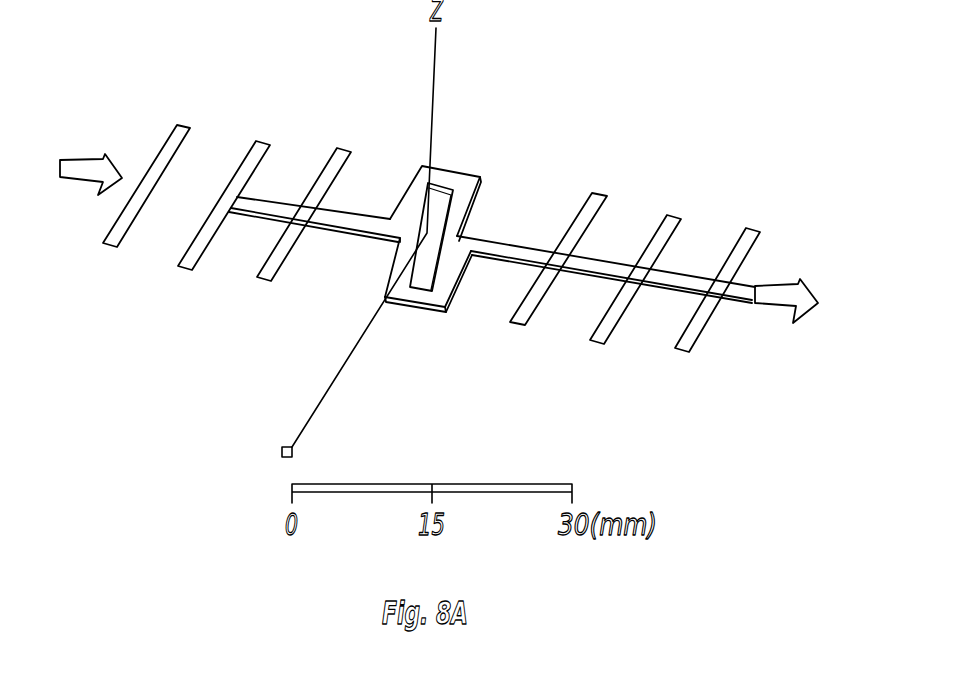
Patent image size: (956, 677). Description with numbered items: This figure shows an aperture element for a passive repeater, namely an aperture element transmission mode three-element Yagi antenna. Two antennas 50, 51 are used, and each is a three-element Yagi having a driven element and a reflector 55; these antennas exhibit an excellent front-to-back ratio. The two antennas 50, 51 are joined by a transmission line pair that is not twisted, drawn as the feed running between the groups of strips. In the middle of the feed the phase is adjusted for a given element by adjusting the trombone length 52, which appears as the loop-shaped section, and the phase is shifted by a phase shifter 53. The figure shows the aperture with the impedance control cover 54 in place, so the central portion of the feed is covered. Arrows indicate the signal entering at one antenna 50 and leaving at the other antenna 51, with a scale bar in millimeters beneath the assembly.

The antenna 50 is at (311, 255).
The antenna 51 is at (722, 218).
The trombone length 52 is at (480, 166).
The phase shifter 53 is at (390, 312).
The impedance control cover 54 is at (443, 325).
The reflector 55 is at (176, 279).